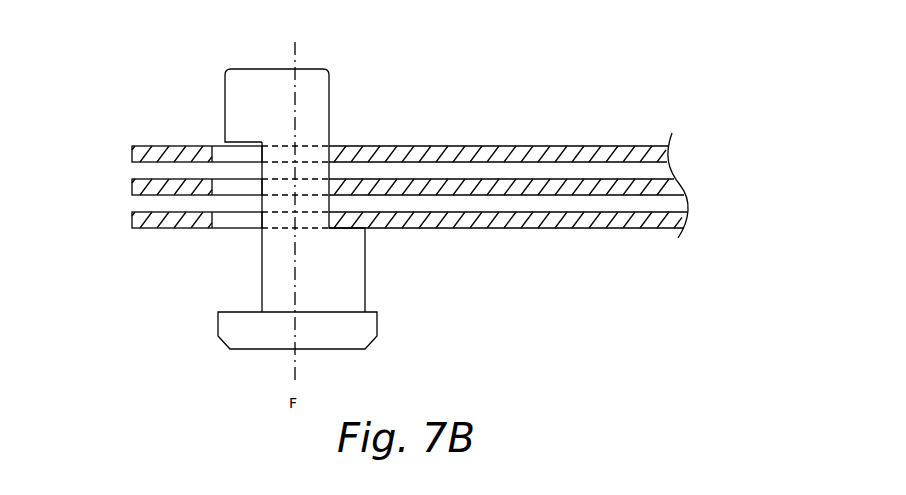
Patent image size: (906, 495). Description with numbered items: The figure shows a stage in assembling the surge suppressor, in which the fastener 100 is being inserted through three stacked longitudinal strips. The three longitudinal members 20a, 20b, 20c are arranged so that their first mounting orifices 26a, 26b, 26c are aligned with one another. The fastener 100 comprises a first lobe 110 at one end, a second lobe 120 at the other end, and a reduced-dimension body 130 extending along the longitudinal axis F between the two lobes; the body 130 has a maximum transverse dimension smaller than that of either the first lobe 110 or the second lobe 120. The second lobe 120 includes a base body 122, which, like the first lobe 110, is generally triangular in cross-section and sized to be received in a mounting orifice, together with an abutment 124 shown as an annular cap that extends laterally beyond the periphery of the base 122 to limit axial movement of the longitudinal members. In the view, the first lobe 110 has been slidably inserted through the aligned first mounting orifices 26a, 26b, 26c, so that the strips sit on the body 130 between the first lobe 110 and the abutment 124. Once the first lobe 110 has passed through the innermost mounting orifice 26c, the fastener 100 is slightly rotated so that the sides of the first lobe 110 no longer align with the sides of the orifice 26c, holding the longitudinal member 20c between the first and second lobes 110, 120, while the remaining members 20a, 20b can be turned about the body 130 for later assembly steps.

The fastener 100 is at (345, 200).
The first lobe 110 is at (278, 117).
The second lobe 120 is at (345, 225).
The body of the second lobe 122 is at (332, 206).
The abutment 124 is at (352, 342).
The reduced-dimension body 130 is at (316, 168).
The longitudinal member 20a is at (620, 222).
The longitudinal member 20b is at (658, 190).
The longitudinal member 20c is at (633, 153).
The first mounting orifice 26a is at (238, 223).
The first mounting orifice 26b is at (227, 188).
The first mounting orifice 26c is at (225, 152).